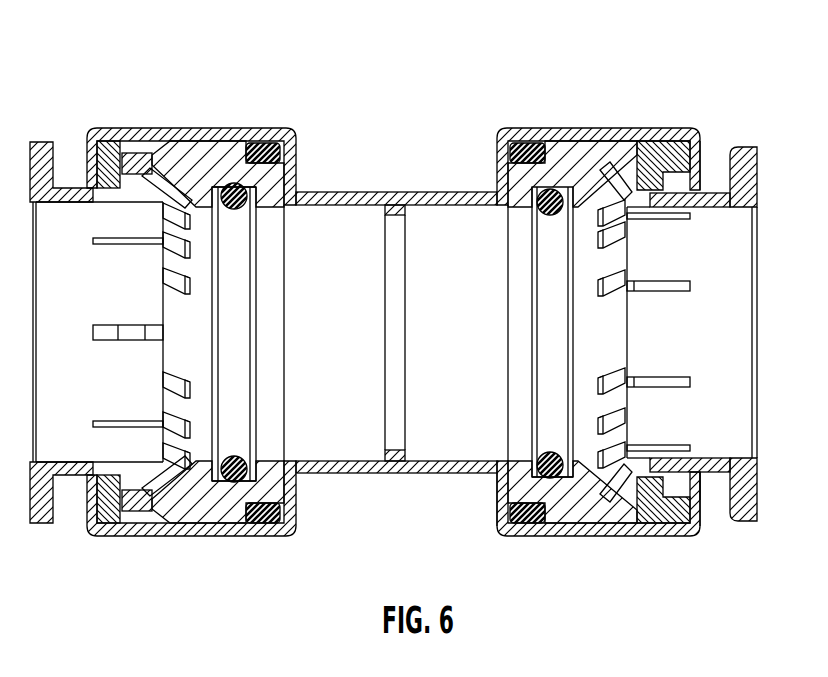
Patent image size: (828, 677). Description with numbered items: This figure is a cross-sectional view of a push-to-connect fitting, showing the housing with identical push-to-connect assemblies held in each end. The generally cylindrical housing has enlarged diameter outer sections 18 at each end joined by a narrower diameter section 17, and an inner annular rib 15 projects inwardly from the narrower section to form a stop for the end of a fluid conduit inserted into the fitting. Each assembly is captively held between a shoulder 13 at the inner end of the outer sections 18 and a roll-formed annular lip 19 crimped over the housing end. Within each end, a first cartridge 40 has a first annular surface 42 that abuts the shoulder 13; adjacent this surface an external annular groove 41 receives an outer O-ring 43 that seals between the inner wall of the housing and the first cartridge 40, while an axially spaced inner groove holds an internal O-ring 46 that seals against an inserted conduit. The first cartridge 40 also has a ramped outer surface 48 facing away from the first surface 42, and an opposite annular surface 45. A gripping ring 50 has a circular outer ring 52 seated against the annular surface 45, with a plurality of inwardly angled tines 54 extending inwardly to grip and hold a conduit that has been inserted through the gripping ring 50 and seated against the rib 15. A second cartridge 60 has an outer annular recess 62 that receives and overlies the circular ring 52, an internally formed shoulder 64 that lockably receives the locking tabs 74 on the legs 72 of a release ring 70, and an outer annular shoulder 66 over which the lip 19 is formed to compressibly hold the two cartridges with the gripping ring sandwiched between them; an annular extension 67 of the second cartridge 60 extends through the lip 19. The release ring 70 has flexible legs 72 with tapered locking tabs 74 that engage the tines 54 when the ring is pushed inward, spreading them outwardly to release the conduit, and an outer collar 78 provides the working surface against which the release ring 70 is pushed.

The shoulder 13 is at (487, 505).
The inner annular rib 15 is at (397, 314).
The narrower diameter section 17 is at (338, 192).
The enlarged diameter outer section 18 is at (178, 128).
The lip 19 is at (706, 512).
The first cartridge 40 is at (582, 514).
The external annular groove 41 is at (554, 531).
The first annular surface 42 is at (489, 477).
The outer O-ring 43 is at (532, 532).
The annular surface 45 is at (640, 527).
The internal O-ring 46 is at (548, 453).
The ramped outer surface 48 is at (578, 205).
The gripping ring 50 is at (627, 368).
The circular outer ring 52 is at (640, 530).
The tines 54 is at (613, 279).
The second cartridge 60 is at (674, 518).
The outer annular recess 62 is at (627, 162).
The internally formed shoulder 64 is at (653, 196).
The outer annular shoulder 66 is at (701, 158).
The annular extension 67 is at (700, 488).
The release ring 70 is at (761, 121).
The legs 72 is at (686, 334).
The locking tabs 74 is at (667, 465).
The outer collar 78 is at (740, 521).